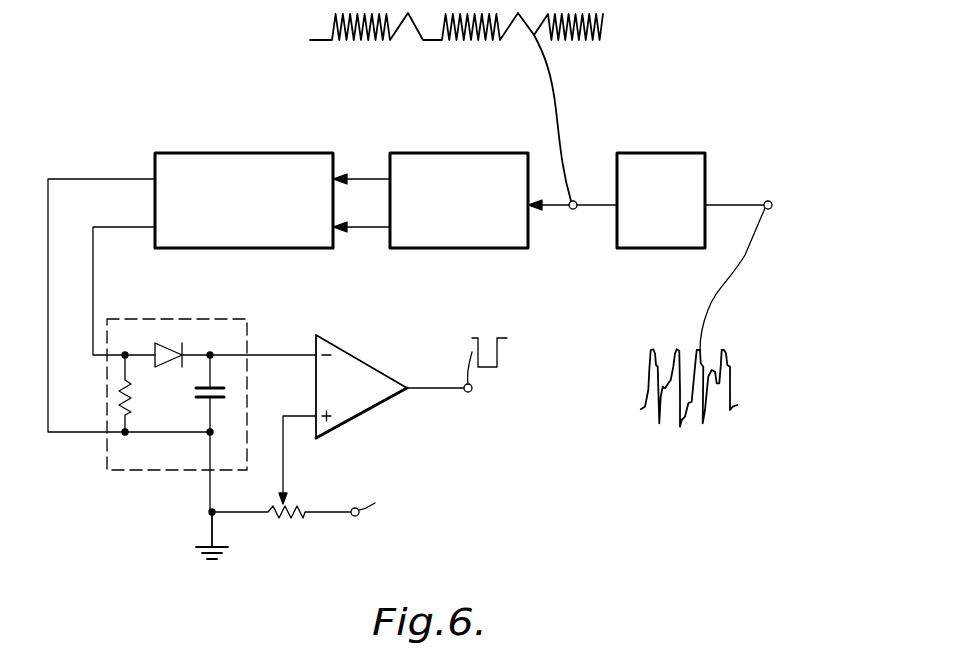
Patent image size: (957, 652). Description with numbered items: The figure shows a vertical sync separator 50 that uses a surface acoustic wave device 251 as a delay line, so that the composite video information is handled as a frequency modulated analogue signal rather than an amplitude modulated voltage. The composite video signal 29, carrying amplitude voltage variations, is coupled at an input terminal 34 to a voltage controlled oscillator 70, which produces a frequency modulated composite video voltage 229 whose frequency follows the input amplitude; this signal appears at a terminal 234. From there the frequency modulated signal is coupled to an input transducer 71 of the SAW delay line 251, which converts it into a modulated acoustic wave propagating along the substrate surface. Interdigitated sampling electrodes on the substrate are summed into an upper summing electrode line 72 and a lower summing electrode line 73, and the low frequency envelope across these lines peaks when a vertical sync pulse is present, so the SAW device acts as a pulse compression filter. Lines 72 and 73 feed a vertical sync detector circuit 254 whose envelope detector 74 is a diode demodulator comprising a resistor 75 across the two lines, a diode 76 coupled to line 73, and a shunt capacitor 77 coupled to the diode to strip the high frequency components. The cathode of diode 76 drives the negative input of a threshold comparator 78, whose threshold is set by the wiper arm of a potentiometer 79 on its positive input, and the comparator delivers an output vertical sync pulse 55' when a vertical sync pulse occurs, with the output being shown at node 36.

The frequency modulated composite video signal 229 is at (603, 20).
The terminal 234 is at (573, 210).
The surface acoustic wave device 251 is at (244, 200).
The input transducer 71 is at (453, 153).
The voltage controlled oscillator 70 is at (657, 153).
The input terminal 34 is at (770, 210).
The vertical sync separator 50 is at (600, 341).
The composite video signal 29 is at (730, 375).
The summing electrode line 72 is at (97, 178).
The summing electrode line 73 is at (108, 227).
The envelope detector 74 is at (168, 318).
The vertical sync detector circuit 254 is at (305, 315).
The diode 76 is at (182, 363).
The resistor 75 is at (130, 412).
The shunt capacitor 77 is at (225, 387).
The threshold comparator 78 is at (362, 367).
The comparator output node 36 is at (468, 392).
The output vertical sync pulse 55' is at (510, 361).
The potentiometer 79 is at (286, 520).